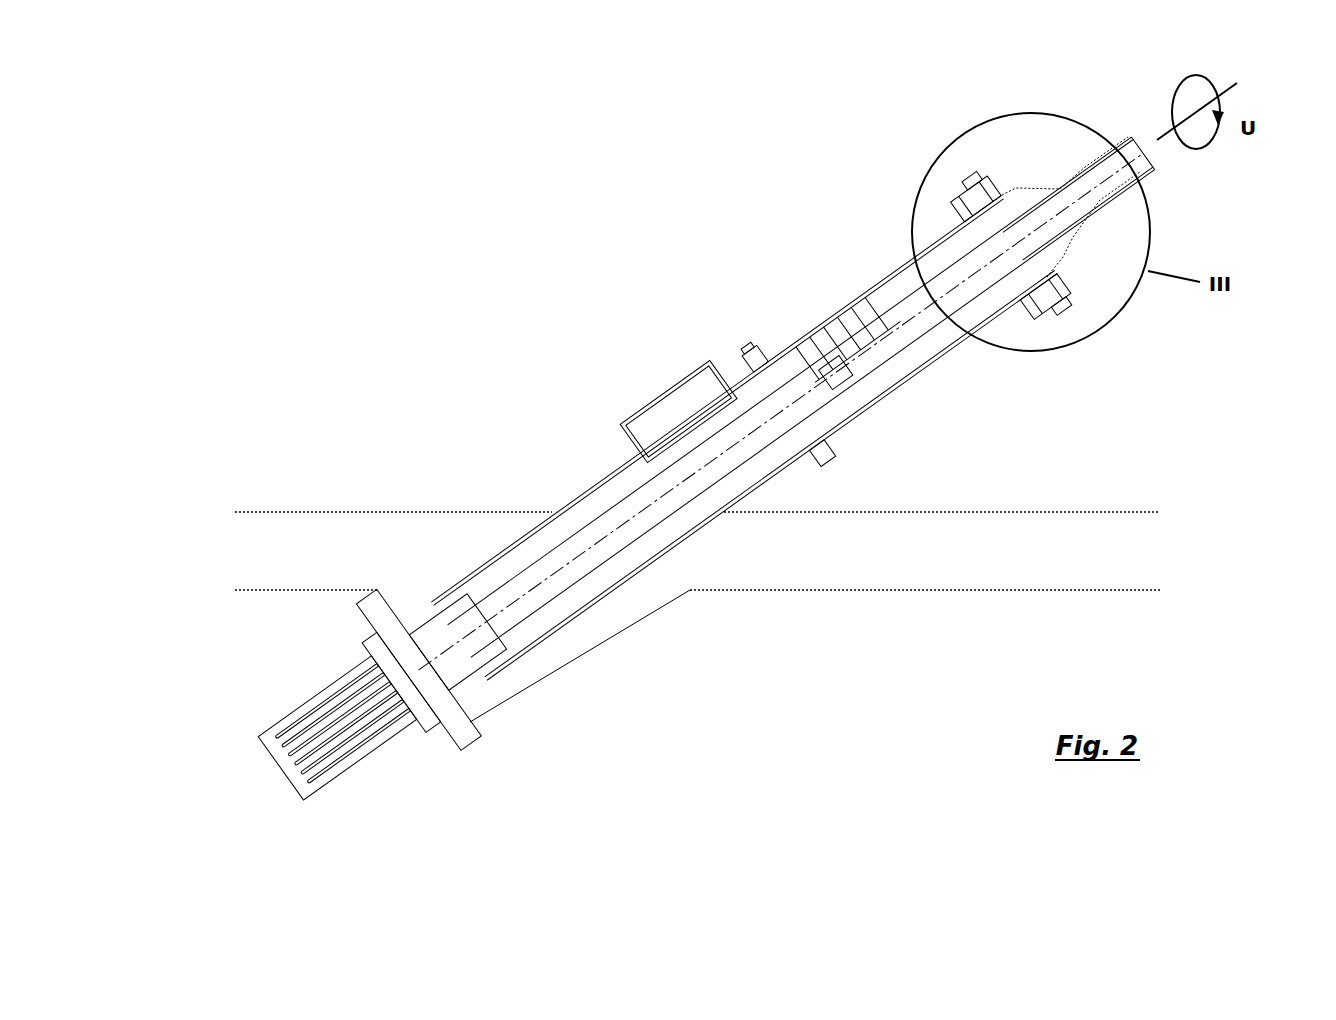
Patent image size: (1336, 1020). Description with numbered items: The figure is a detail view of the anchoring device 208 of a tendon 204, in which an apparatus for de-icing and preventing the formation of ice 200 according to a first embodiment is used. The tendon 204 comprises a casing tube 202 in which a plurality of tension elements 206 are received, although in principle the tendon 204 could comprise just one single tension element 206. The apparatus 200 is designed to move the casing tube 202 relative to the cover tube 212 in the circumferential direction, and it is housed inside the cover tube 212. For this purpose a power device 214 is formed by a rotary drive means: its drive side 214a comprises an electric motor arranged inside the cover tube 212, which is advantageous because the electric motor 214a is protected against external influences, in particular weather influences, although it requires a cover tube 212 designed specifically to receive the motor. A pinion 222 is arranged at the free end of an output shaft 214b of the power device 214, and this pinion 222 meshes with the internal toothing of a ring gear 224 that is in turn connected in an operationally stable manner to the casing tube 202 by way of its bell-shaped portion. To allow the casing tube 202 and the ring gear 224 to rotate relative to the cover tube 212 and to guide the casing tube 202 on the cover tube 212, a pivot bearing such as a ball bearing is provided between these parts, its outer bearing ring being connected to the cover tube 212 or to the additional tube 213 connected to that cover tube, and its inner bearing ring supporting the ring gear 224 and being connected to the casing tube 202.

The apparatus for de-icing and preventing the formation of ice 200 is at (710, 233).
The casing tube 202 is at (1135, 155).
The tendon 204 is at (575, 568).
The tension elements 206 is at (312, 726).
The anchoring device 208 is at (440, 405).
The cover tube 212 is at (490, 552).
The additional tube 213 is at (870, 403).
The power device 214 is at (717, 347).
The drive side 214a is at (674, 422).
The output shaft 214b is at (882, 290).
The pinion 222 is at (978, 185).
The ring gear 224 is at (960, 200).